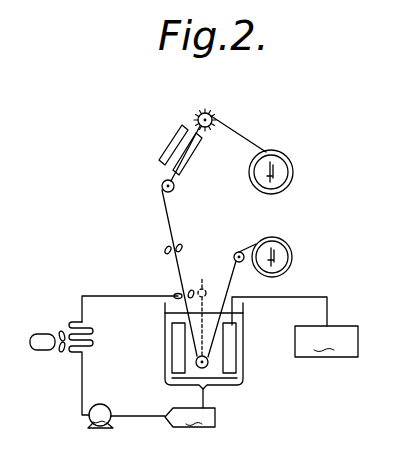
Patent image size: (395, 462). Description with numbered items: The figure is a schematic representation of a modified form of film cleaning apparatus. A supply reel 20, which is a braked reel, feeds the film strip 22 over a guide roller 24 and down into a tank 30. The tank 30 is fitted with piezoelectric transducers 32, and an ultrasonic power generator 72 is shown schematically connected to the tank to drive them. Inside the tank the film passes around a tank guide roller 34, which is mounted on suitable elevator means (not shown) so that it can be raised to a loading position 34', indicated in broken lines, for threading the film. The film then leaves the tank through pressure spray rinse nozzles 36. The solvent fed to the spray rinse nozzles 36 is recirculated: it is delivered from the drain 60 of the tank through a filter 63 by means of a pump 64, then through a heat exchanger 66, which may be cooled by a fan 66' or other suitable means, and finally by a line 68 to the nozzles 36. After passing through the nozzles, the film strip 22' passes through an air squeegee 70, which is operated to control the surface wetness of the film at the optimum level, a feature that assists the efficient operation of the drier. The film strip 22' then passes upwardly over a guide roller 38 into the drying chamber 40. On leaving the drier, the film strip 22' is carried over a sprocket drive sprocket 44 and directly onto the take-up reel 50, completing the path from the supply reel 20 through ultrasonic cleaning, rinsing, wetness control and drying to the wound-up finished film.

The supply reel 20 is at (293, 257).
The film strip 22 is at (218, 236).
The film strip 22' is at (173, 273).
The guide roller 24 is at (239, 251).
The tank 30 is at (243, 358).
The piezoelectric transducers 32 is at (176, 347).
The tank guide roller 34 is at (239, 378).
The loading position 34' is at (213, 309).
The pressure spray rinse nozzles 36 is at (190, 289).
The guide roller 38 is at (174, 191).
The drying chamber 40 is at (163, 146).
The sprocket drive sprocket 44 is at (208, 128).
The take-up reel 50 is at (292, 164).
The drain 60 is at (208, 387).
The filter 63 is at (190, 417).
The pump 64 is at (126, 416).
The heat exchanger 66 is at (100, 368).
The fan 66' is at (42, 356).
The line 68 is at (114, 294).
The air squeegee 70 is at (182, 247).
The ultrasonic power generator 72 is at (295, 327).